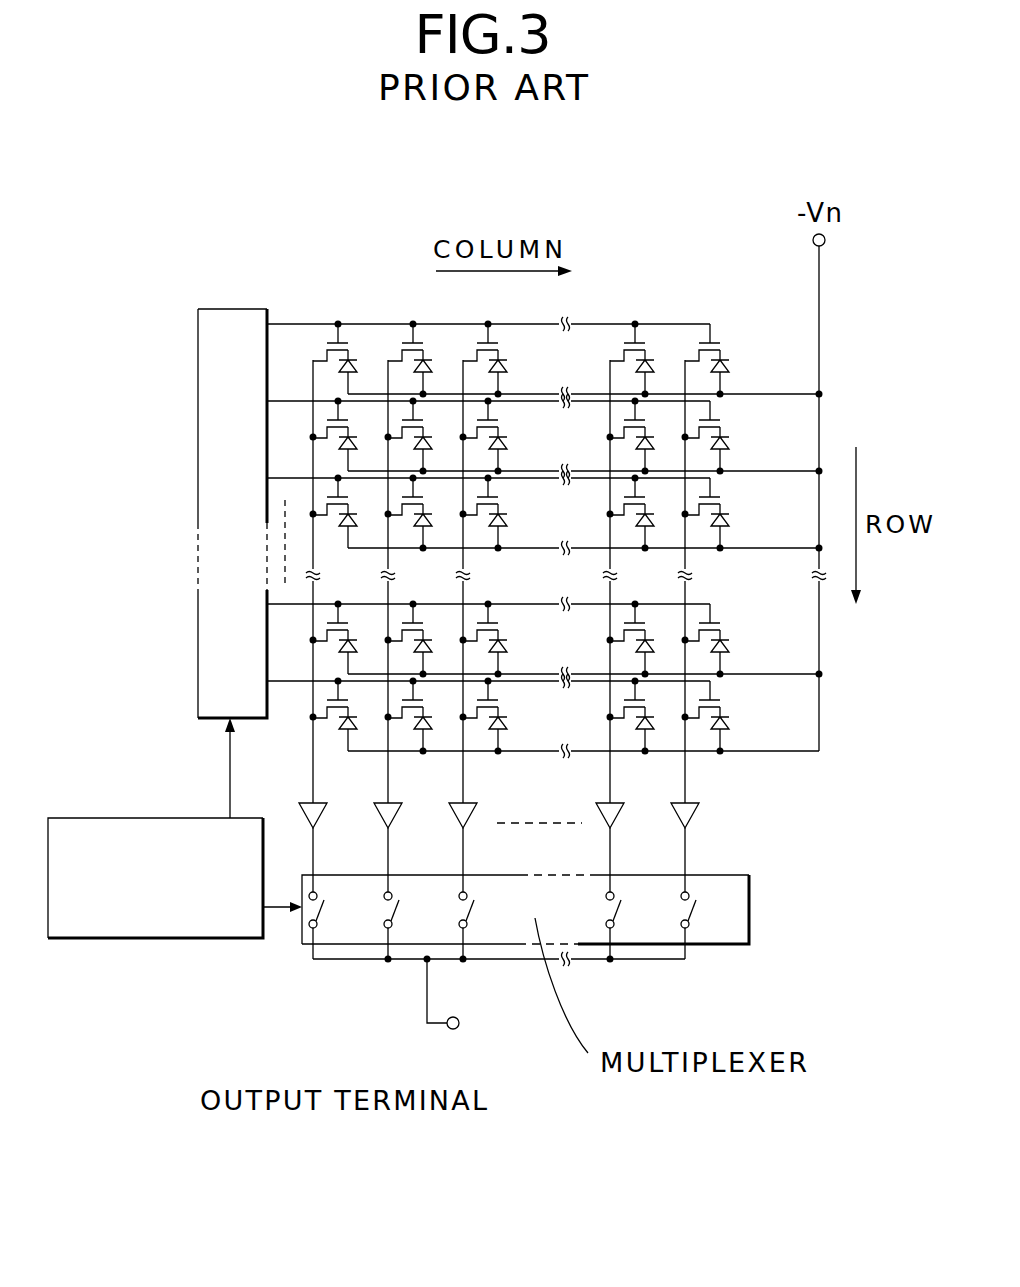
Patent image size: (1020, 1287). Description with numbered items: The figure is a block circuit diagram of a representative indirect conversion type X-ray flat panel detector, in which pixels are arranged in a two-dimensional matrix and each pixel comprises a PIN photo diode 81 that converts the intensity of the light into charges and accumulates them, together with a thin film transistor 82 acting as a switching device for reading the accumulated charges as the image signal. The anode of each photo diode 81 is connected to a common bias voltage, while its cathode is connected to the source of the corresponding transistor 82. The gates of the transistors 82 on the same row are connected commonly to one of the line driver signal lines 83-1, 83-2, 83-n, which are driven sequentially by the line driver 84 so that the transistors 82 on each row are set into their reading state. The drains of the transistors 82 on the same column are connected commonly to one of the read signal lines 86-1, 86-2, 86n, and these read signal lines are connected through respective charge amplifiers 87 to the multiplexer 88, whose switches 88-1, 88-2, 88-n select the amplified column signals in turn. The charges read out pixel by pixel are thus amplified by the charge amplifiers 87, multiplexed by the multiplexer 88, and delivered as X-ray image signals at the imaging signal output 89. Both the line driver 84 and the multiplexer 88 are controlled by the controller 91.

The line driver 84 is at (198, 357).
The line driver signal line 83-1 is at (316, 323).
The line driver signal line 83-2 is at (293, 400).
The line driver signal line 83-n is at (283, 684).
The thin film transistor 82 is at (345, 340).
The PIN photo diode 81 is at (362, 370).
The read signal line 86-1 is at (347, 785).
The read signal line 86-2 is at (422, 785).
The read signal line 86n is at (685, 785).
The charge amplifier 87 is at (320, 812).
The multiplexer 88 is at (537, 964).
The multiplexer switch 88-1 is at (301, 914).
The multiplexer switch 88-2 is at (382, 914).
The multiplexer switch 88-n is at (663, 950).
The imaging signal output 89 is at (458, 1029).
The controller 91 is at (140, 940).